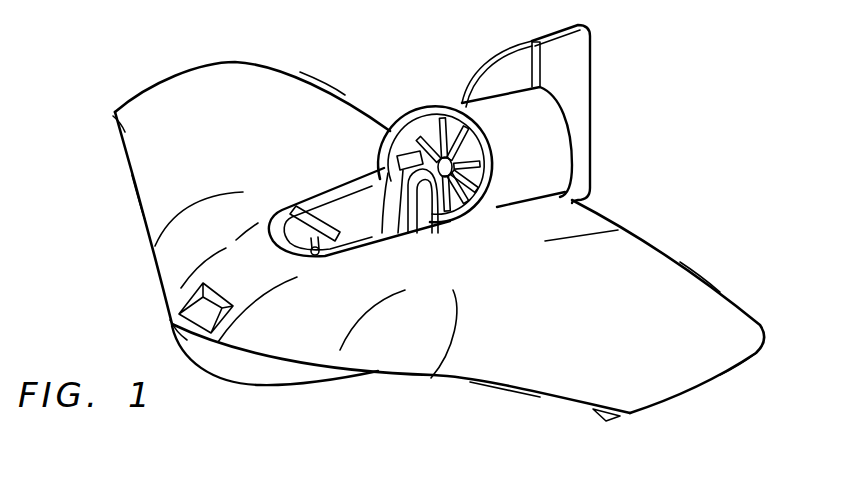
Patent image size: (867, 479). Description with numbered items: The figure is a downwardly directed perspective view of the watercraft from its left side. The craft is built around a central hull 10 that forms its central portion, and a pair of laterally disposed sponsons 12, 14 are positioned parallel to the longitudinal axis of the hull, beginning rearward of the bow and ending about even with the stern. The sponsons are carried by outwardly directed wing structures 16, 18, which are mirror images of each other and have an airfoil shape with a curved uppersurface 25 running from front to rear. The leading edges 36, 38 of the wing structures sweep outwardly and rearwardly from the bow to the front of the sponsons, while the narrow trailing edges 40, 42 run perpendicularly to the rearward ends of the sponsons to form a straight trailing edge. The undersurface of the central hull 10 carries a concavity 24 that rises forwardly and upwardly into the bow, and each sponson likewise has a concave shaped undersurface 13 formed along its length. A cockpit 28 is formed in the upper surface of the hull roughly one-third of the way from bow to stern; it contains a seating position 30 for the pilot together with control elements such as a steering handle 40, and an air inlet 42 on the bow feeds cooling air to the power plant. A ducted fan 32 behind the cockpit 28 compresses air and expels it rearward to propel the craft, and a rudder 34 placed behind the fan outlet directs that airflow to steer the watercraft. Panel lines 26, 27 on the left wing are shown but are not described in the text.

The central hull 10 is at (315, 373).
The sponson 12 is at (697, 382).
The concave shaped undersurface 13 is at (607, 420).
The sponson 14 is at (113, 114).
The wing structure 16 is at (594, 316).
The wing structure 18 is at (246, 141).
The concavity 24 is at (197, 347).
The curved uppersurface 25 is at (431, 380).
The nose tip edge 26 is at (170, 326).
The panel line 27 is at (154, 246).
The cockpit 28 is at (362, 190).
The seating position 30 is at (374, 235).
The ducted fan 32 is at (412, 117).
The rudder 34 is at (578, 71).
The leading edge 36 is at (503, 392).
The leading edge 38 is at (134, 180).
The trailing edge 40 is at (318, 207).
The trailing edge 42 is at (323, 90).